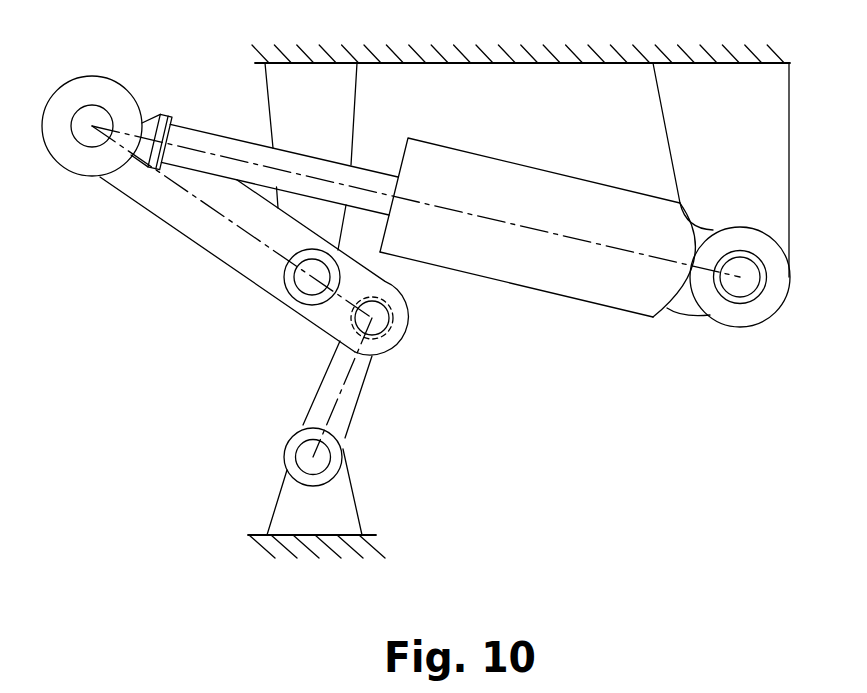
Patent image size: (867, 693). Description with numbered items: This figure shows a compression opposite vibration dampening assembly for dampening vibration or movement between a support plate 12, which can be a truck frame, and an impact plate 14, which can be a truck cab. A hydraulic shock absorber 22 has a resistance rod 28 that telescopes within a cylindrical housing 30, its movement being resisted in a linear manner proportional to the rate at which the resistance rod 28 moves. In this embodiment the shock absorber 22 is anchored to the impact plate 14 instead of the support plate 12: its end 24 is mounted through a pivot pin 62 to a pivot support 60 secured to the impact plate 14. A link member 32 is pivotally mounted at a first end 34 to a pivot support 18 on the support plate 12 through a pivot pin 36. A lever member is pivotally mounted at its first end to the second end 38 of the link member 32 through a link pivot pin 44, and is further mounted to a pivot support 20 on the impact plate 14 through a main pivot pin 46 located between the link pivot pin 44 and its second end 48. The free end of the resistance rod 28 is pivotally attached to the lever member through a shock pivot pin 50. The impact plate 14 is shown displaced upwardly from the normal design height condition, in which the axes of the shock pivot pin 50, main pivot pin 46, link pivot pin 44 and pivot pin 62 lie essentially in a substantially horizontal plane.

The support plate 12 is at (250, 535).
The impact plate 14 is at (522, 63).
The pivot support 18 is at (358, 508).
The pivot support 20 is at (353, 103).
The hydraulic shock absorber 22 is at (573, 177).
The end of shock absorber 24 is at (685, 312).
The resistance rod 28 is at (233, 139).
The cylindrical housing 30 is at (552, 293).
The link member 32 is at (363, 393).
The first end of link member 34 is at (343, 438).
The pivot pin 36 is at (313, 457).
The second end of link member 38 is at (380, 347).
The link pivot pin 44 is at (372, 318).
The main pivot pin 46 is at (312, 278).
The second end of lever member 48 is at (108, 82).
The shock pivot pin 50 is at (92, 126).
The pivot support 60 is at (673, 126).
The pivot pin 62 is at (740, 277).